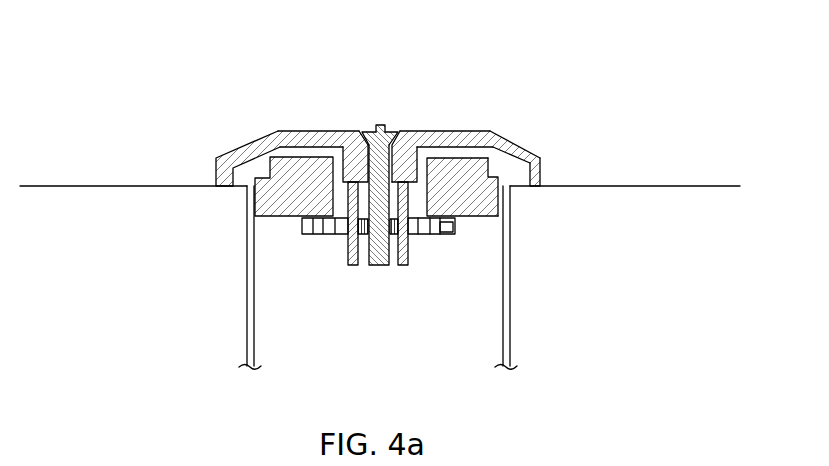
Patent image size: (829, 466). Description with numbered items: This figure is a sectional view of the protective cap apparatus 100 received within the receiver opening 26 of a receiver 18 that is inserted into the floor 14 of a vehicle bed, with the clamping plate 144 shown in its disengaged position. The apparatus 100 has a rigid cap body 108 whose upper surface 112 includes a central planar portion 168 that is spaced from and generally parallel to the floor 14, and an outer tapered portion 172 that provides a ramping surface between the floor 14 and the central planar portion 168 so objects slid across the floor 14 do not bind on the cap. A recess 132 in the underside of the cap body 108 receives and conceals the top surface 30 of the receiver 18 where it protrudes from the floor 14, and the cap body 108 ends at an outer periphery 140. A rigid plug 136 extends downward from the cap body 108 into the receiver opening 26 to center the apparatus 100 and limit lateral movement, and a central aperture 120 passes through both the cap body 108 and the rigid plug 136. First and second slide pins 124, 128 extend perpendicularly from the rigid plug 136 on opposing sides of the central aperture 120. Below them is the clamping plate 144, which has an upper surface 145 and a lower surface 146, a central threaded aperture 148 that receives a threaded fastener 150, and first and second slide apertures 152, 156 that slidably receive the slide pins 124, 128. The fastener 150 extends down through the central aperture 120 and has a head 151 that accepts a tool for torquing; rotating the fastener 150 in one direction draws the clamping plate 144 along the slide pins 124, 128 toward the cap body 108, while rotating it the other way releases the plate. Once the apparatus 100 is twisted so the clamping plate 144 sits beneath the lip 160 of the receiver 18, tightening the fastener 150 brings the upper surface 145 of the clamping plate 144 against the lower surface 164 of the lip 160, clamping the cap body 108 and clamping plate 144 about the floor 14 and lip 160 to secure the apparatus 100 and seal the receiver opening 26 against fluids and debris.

The floor 14 is at (690, 186).
The receiver 18 is at (277, 150).
The receiver opening 26 is at (419, 175).
The top surface 30 is at (498, 147).
The apparatus 100 is at (390, 186).
The cap body 108 is at (490, 132).
The upper surface 112 is at (265, 127).
The central aperture 120 is at (391, 157).
The first slide pin 124 is at (356, 266).
The second slide pin 128 is at (385, 266).
The recess 132 is at (522, 152).
The rigid plug 136 is at (353, 158).
The outer periphery 140 is at (530, 187).
The clamping plate 144 is at (455, 218).
The upper surface 145 is at (445, 225).
The lower surface 146 is at (433, 236).
The central aperture 148 is at (395, 228).
The fastener 150 is at (386, 127).
The head 151 is at (370, 128).
The first slide aperture 152 is at (360, 233).
The second slide aperture 156 is at (408, 234).
The lip 160 is at (487, 203).
The lower surface 164 is at (497, 218).
The central planar portion 168 is at (333, 131).
The outer tapered portion 172 is at (240, 148).